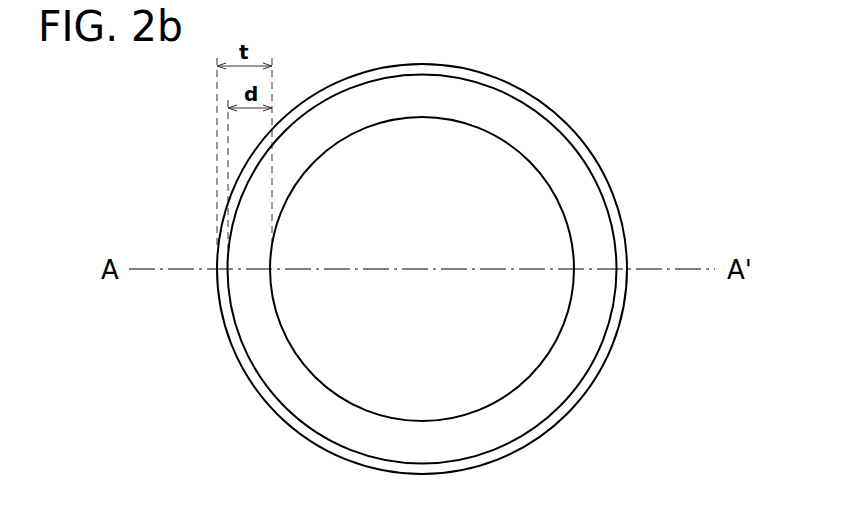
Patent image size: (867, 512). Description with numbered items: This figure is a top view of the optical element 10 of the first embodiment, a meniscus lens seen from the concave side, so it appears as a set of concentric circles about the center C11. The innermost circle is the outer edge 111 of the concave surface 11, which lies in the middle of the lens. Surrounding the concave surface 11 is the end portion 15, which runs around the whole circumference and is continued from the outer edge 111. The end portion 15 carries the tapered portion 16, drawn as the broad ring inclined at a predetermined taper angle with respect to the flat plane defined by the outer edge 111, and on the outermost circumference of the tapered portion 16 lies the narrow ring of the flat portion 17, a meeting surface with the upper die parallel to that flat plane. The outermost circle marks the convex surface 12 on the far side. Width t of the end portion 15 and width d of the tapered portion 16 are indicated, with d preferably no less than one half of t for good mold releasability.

The optical element 10 is at (523, 126).
The concave surface 11 is at (437, 165).
The outer edge 111 is at (528, 162).
The convex surface 12 is at (568, 120).
The end portion 15 is at (607, 247).
The tapered portion 16 is at (587, 219).
The flat portion 17 is at (600, 184).
The center of base C11 is at (422, 268).